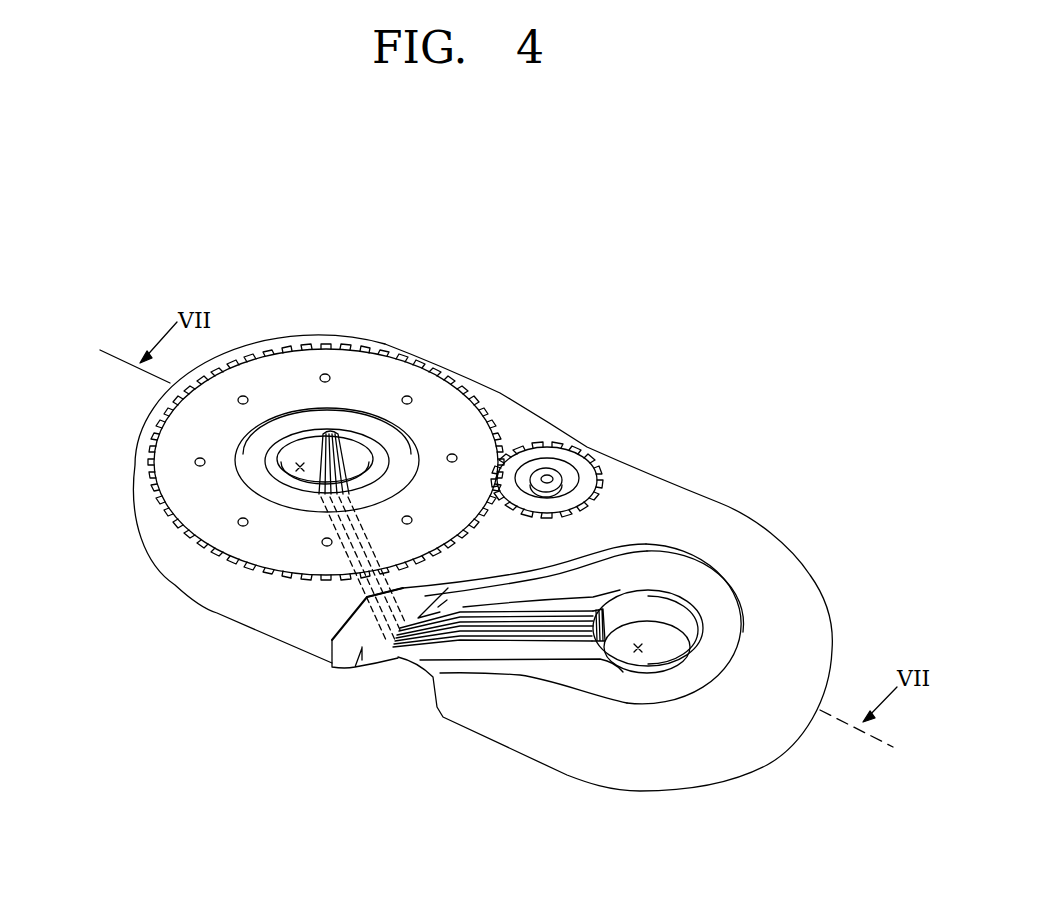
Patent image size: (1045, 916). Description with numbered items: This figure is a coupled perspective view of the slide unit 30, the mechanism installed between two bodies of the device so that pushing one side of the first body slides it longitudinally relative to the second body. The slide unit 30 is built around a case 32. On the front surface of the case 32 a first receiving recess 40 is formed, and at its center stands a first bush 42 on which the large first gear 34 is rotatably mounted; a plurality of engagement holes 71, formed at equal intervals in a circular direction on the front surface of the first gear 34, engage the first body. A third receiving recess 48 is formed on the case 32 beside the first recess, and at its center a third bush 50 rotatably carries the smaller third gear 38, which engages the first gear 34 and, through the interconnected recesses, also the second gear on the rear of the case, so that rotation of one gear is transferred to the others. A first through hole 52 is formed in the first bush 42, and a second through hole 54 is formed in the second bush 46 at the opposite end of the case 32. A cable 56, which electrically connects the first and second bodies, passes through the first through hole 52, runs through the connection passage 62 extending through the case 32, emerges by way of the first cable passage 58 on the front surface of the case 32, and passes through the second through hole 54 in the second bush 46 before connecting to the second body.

The slide unit 30 is at (580, 301).
The case 32 is at (703, 500).
The first gear 34 is at (184, 430).
The third gear 38 is at (570, 450).
The first receiving recess 40 is at (396, 354).
The first bush 42 is at (370, 432).
The second bush 46 is at (673, 613).
The third receiving recess 48 is at (537, 441).
The third bush 50 is at (557, 477).
The first through hole 52 is at (300, 466).
The second through hole 54 is at (638, 650).
The cable 56 is at (534, 627).
The first cable passage 58 is at (482, 652).
The connection passage 62 is at (398, 658).
The engagement holes 71 is at (325, 373).